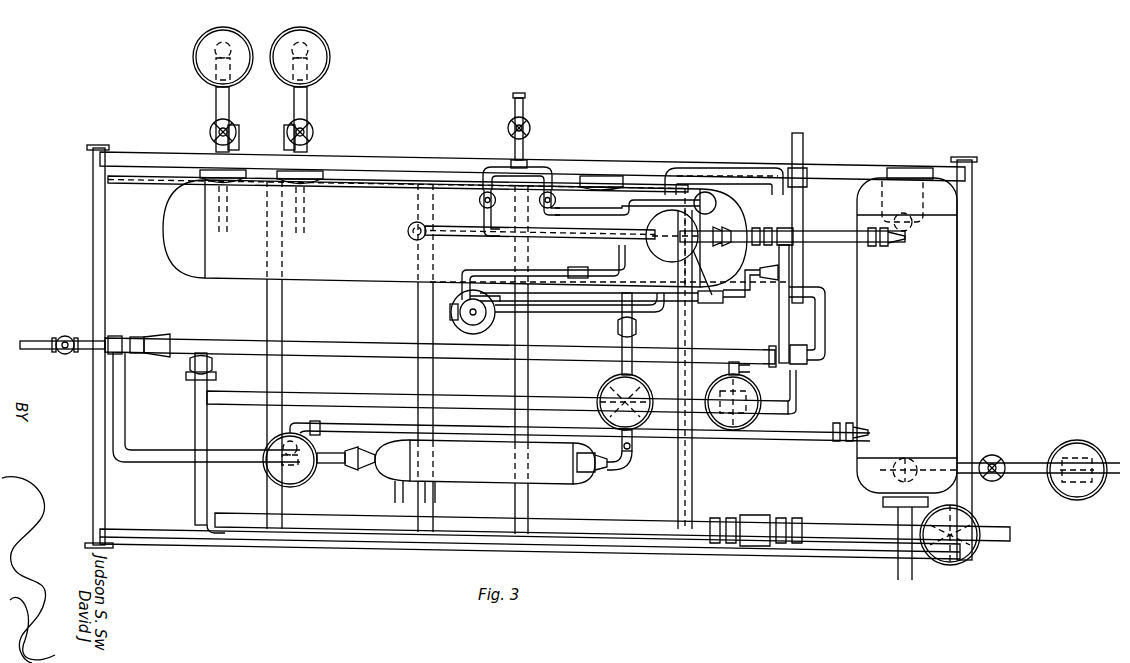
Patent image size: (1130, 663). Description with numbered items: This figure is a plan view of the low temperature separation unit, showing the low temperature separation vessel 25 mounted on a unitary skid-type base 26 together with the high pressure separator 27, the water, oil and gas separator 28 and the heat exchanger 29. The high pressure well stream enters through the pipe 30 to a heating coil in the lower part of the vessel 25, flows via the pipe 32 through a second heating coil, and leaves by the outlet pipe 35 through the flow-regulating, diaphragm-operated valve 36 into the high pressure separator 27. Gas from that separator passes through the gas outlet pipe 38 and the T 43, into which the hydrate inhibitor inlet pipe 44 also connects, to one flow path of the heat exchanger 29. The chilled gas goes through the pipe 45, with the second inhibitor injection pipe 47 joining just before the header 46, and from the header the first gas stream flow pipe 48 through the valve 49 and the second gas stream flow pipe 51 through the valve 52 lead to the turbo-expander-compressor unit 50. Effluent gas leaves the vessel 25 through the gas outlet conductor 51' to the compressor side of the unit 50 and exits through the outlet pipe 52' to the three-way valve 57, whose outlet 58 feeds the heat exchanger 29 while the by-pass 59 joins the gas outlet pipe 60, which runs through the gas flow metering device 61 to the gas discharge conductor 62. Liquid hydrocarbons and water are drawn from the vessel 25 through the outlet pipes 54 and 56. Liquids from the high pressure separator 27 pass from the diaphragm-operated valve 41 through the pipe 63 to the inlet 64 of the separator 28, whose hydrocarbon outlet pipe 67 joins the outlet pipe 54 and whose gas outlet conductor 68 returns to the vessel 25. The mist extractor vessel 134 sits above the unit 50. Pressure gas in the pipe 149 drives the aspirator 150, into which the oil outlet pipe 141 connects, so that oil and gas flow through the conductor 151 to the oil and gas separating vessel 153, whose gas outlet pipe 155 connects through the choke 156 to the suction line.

The low temperature separation vessel 25 is at (373, 193).
The unitary skid-type base 26 is at (597, 178).
The high pressure separator 27 is at (490, 471).
The water, oil and gas separator 28 is at (945, 398).
The heat exchanger 29 is at (333, 330).
The pipe 30 is at (803, 148).
The pipe 32 is at (728, 170).
The outlet pipe 35 is at (633, 328).
The flow-regulating, diaphragm-operated valve 36 is at (641, 386).
The gas outlet pipe 38 is at (312, 475).
The diaphragm-operated valve 41 is at (267, 466).
The T 43 is at (127, 338).
The hydrate inhibitor inlet pipe 44 is at (46, 341).
The pipe 45 is at (819, 290).
The header 46 is at (530, 170).
The second inhibitor injection pipe 47 is at (512, 108).
The first gas stream flow pipe 48 is at (618, 209).
The valve 49 is at (556, 200).
The turbo-expander-compressor unit 50 is at (652, 246).
The second gas stream flow pipe 51 is at (540, 223).
The gas outlet conductor 51' is at (433, 213).
The valve 52 is at (500, 213).
The outlet pipe 52' is at (769, 304).
The outlet pipe 54 is at (300, 107).
The outlet pipe 56 is at (223, 107).
The three-way valve 57 is at (740, 428).
The outlet 58 is at (740, 385).
The by-pass 59 is at (571, 384).
The gas outlet pipe 60 is at (195, 424).
The gas flow metering device 61 is at (764, 500).
The gas discharge conductor 62 is at (1008, 516).
The pipe 63 is at (346, 424).
The inlet 64 is at (870, 430).
The outlet pipe 67 is at (333, 174).
The gas outlet conductor 68 is at (826, 241).
The mist extractor vessel 134 is at (745, 217).
The oil outlet pipe 141 is at (735, 300).
The pipe 149 is at (690, 264).
The aspirator 150 is at (718, 303).
The conductor 151 is at (563, 312).
The oil and gas separating vessel 153 is at (486, 330).
The gas outlet pipe 155 is at (462, 294).
The choke 156 is at (576, 266).